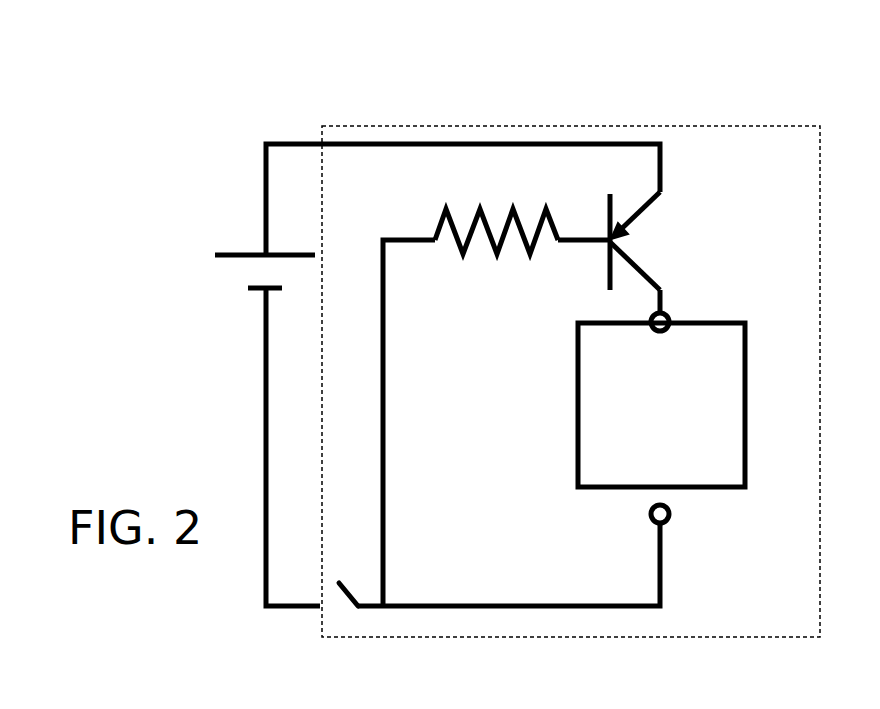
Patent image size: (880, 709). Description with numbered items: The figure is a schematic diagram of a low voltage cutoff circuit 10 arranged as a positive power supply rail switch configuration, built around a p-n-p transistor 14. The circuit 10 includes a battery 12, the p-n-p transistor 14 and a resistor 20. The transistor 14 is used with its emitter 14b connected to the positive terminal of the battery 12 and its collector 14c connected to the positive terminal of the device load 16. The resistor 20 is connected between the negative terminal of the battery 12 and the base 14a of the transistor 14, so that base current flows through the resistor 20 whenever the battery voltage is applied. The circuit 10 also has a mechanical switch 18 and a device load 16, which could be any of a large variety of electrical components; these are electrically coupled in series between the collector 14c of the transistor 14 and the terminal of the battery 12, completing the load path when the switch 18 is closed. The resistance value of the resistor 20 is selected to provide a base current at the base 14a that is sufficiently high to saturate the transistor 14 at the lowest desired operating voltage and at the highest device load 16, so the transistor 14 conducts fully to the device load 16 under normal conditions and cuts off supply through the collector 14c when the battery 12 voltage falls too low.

The low voltage cutoff circuit 10 is at (347, 124).
The battery 12 is at (227, 268).
The p-n-p transistor 14 is at (646, 242).
The base 14a is at (568, 247).
The emitter 14b is at (606, 204).
The collector 14c is at (665, 279).
The device load 16 is at (661, 418).
The mechanical switch 18 is at (350, 606).
The resistor 20 is at (483, 206).